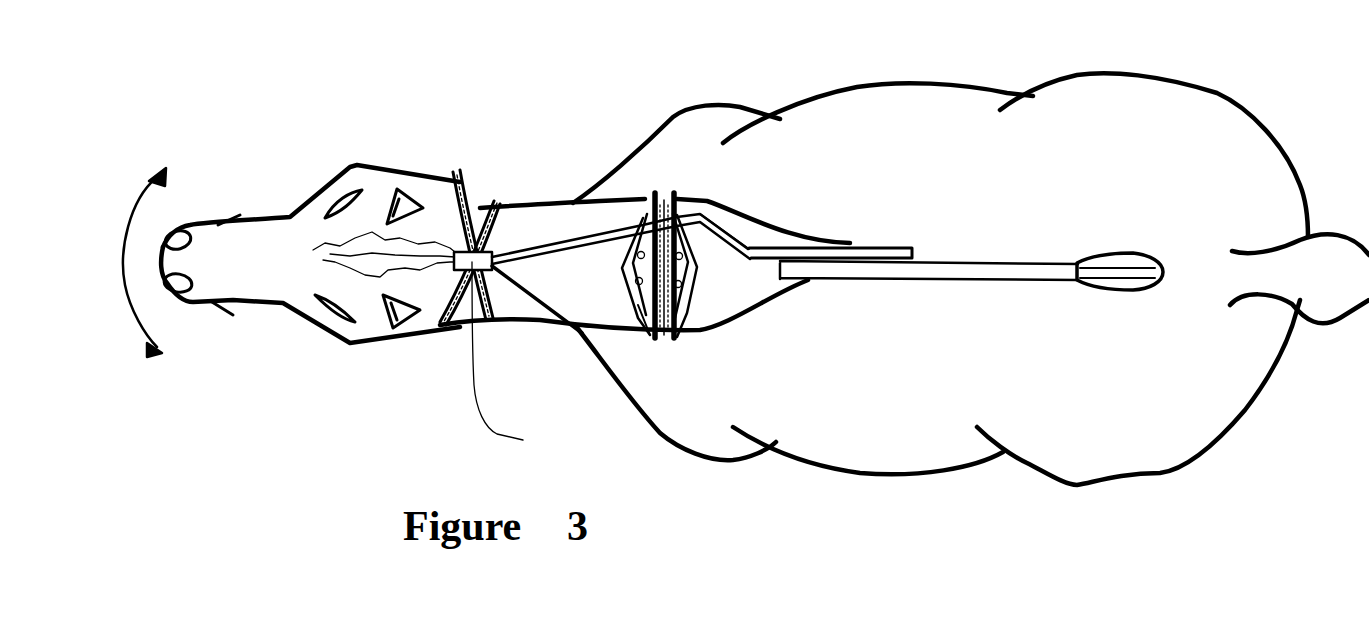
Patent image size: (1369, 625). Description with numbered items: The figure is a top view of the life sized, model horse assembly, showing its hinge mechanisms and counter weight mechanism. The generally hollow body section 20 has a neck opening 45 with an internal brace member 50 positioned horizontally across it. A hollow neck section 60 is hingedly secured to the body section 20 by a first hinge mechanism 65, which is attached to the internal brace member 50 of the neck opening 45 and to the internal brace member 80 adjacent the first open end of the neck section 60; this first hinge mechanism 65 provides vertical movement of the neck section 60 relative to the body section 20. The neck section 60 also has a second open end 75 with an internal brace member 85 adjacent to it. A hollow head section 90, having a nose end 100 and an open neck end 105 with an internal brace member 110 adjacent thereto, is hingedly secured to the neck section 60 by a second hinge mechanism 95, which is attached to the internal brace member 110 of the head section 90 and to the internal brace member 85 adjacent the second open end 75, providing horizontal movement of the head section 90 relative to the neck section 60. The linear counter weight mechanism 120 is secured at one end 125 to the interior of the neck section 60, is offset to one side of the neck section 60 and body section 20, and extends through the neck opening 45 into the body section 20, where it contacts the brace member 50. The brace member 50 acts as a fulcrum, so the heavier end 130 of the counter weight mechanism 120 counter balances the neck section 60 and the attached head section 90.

The body section 20 is at (667, 157).
The neck opening 45 is at (683, 273).
The internal brace member 50 is at (662, 322).
The hollow neck section 60 is at (590, 300).
The first hinge mechanism 65 is at (638, 260).
The second open end 75 is at (471, 250).
The internal brace member 80 is at (640, 308).
The internal brace member 85 is at (573, 332).
The hollow head section 90 is at (267, 282).
The second hinge mechanism 95 is at (515, 358).
The nose end 100 is at (170, 248).
The open neck end 105 is at (460, 195).
The internal brace member 110 is at (452, 262).
The counter weight mechanism 120 is at (822, 236).
The one end 125 is at (524, 236).
The heavier end 130 is at (1097, 288).